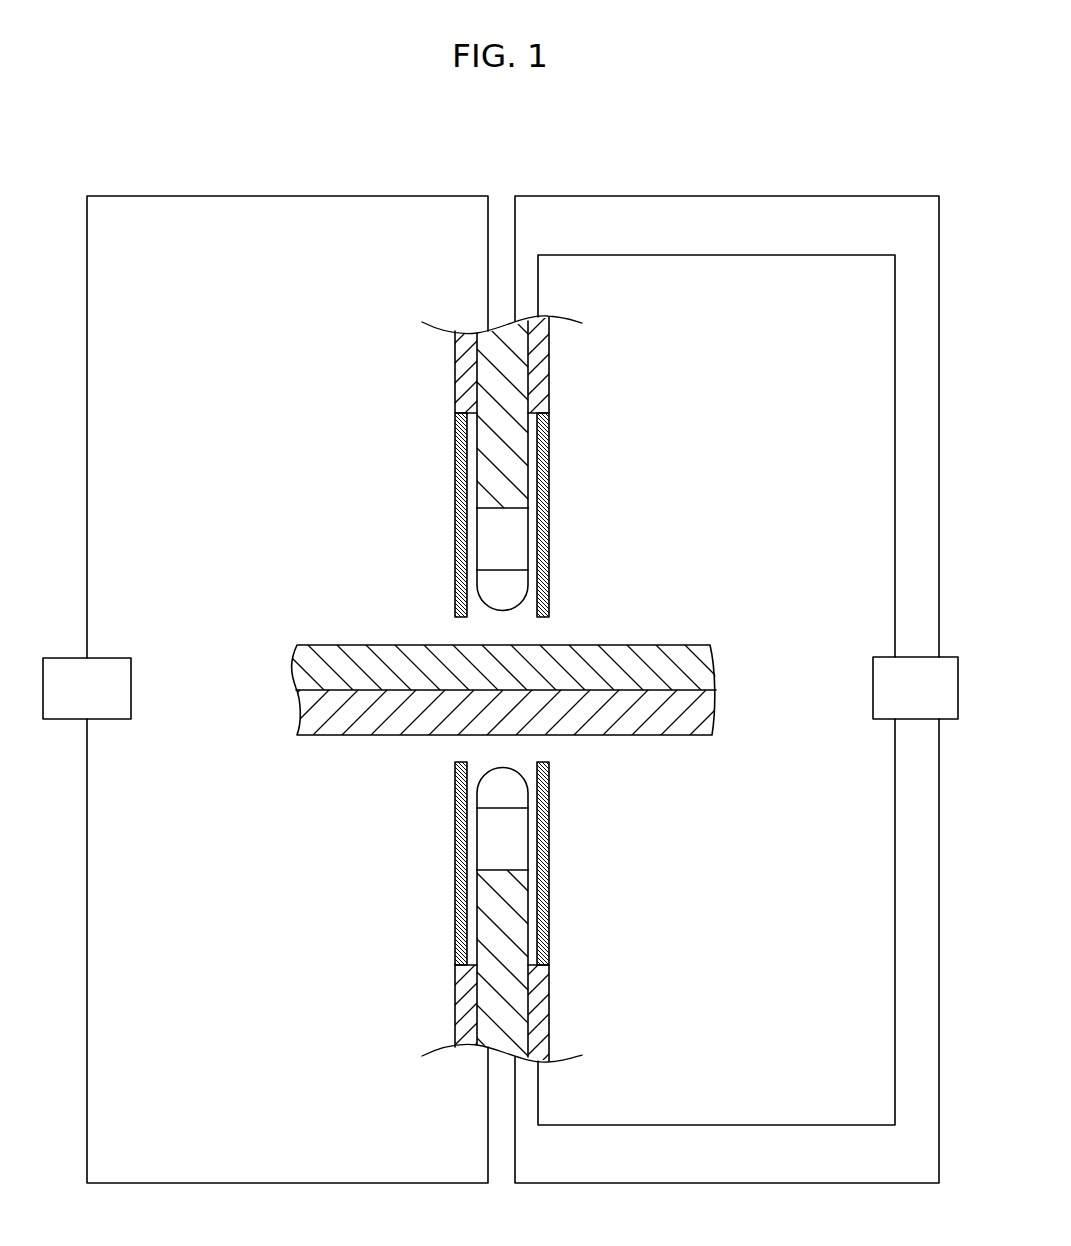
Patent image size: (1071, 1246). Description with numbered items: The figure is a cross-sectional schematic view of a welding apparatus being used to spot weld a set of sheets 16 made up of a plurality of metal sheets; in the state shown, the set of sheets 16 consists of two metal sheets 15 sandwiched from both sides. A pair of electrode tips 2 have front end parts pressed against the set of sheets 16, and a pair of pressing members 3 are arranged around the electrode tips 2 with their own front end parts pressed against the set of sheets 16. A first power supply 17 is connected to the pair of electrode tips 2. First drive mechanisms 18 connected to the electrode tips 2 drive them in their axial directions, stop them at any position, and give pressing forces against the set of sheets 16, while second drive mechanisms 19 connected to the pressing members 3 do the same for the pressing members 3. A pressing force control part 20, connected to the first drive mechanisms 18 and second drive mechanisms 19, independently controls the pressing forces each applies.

The electrode tips 2 is at (510, 545).
The pressing members 3 is at (455, 463).
The metal sheets 15 is at (686, 667).
The set of sheets 16 is at (548, 690).
The first power supply 17 is at (118, 657).
The first drive mechanisms 18 is at (510, 377).
The second drive mechanisms 19 is at (537, 343).
The pressing force control part 20 is at (889, 657).